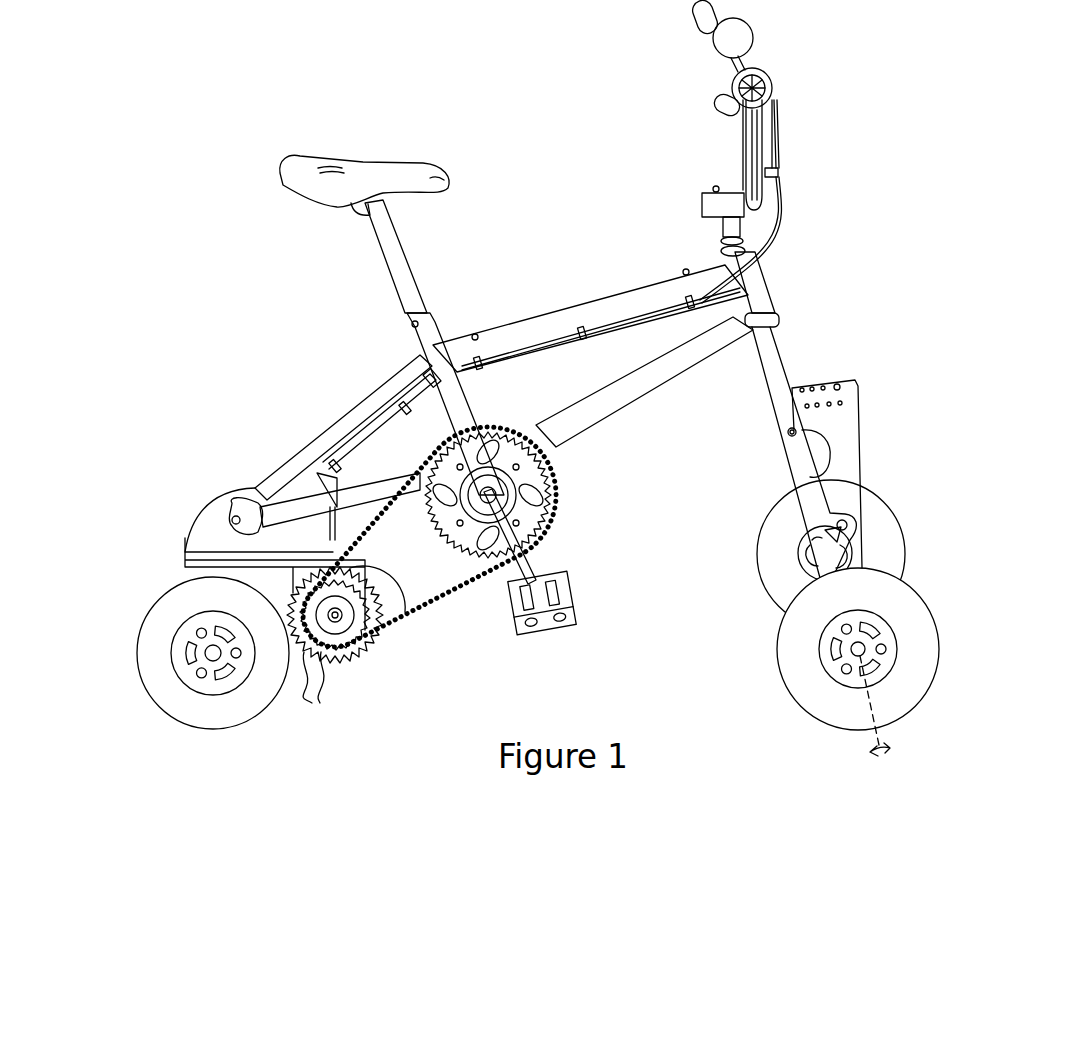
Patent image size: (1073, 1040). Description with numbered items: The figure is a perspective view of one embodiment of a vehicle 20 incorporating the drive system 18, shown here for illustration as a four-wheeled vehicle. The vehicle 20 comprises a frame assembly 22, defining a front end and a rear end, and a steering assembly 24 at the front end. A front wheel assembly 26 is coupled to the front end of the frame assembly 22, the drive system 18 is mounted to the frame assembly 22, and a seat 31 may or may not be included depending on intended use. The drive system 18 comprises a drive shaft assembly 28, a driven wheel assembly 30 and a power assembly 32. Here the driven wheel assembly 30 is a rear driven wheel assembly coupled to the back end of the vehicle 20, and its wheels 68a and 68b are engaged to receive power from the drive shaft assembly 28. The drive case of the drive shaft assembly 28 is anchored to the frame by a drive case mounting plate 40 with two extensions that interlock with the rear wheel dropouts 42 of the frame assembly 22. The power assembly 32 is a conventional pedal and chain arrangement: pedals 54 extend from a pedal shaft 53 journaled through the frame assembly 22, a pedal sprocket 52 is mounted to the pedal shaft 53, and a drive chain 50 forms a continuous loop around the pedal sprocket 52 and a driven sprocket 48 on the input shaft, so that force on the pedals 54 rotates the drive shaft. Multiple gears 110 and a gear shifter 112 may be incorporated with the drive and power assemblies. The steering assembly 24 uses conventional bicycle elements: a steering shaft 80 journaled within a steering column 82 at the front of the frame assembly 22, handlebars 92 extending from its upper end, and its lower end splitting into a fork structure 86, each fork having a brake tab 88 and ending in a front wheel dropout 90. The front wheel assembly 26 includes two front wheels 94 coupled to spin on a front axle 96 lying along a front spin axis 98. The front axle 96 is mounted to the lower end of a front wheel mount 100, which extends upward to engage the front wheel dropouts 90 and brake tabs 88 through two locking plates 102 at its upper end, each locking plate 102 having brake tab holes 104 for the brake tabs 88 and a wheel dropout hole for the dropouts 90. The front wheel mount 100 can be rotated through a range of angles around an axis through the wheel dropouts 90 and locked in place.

The drive system 18 is at (590, 700).
The vehicle 20 is at (582, 172).
The frame assembly 22 is at (568, 325).
The steering assembly 24 is at (738, 185).
The front wheel assembly 26 is at (859, 530).
The drive shaft assembly 28 is at (408, 607).
The driven wheel assembly 30 is at (187, 610).
The seat 31 is at (320, 183).
The power assembly 32 is at (494, 546).
The drive case mounting plate 40 is at (222, 537).
The rear wheel dropouts 42 is at (236, 521).
The driven sprocket 48 is at (340, 634).
The drive chain 50 is at (406, 613).
The pedal sprocket 52 is at (540, 478).
The pedal shaft 53 is at (490, 493).
The pedals 54 is at (571, 605).
The wheel 68a is at (208, 507).
The wheel 68b is at (187, 663).
The steering shaft 80 is at (740, 222).
The steering column 82 is at (782, 289).
The fork structure 86 is at (805, 452).
The brake tab 88 is at (789, 432).
The front wheel dropout 90 is at (827, 553).
The handlebars 92 is at (724, 107).
The front wheel 94 is at (886, 550).
The front axle 96 is at (855, 654).
The front spin axis 98 is at (873, 714).
The front wheel mount 100 is at (850, 477).
The locking plate 102 is at (857, 383).
The brake tab holes 104 is at (840, 387).
The multiple gears 110 is at (311, 692).
The gear shifter 112 is at (762, 88).